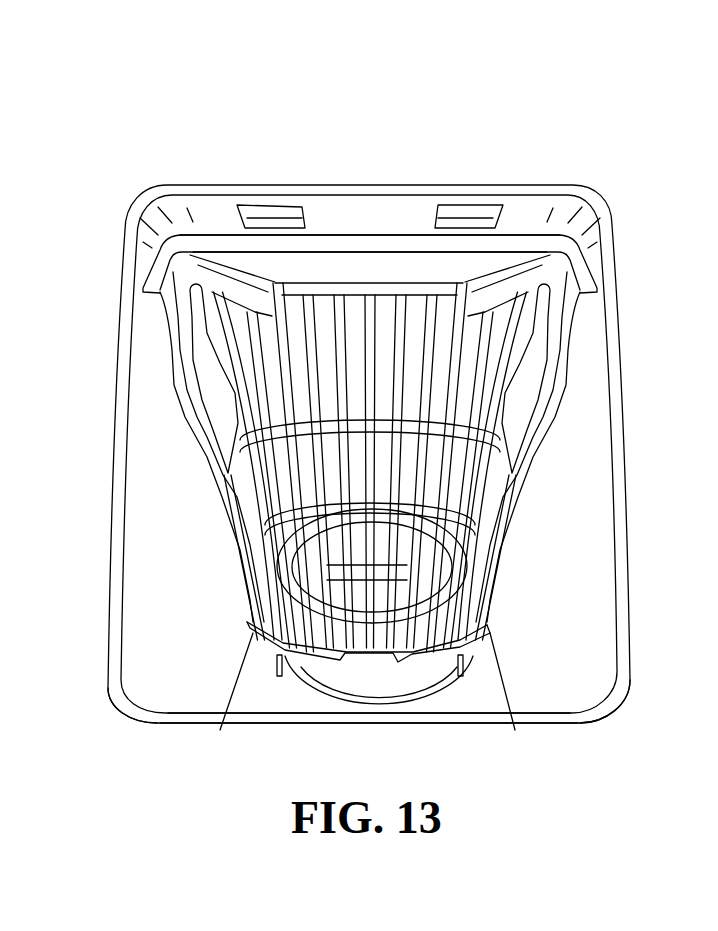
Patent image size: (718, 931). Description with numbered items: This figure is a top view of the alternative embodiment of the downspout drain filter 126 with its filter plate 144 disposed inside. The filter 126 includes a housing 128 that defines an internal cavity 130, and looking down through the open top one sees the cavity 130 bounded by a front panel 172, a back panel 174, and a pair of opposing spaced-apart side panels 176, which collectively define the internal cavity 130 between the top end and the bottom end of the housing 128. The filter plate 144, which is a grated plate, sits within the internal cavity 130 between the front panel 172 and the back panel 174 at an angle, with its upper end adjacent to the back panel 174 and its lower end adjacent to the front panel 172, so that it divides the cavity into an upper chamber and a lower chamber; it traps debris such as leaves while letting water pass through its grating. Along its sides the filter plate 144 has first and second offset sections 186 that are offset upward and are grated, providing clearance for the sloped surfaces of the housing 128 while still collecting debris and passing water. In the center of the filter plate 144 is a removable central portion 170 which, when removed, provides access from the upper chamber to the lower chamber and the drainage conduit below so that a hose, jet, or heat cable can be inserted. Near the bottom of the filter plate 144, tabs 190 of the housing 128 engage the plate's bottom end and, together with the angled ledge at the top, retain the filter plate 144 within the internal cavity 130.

The filter 126 is at (138, 110).
The housing 128 is at (145, 573).
The internal cavity 130 is at (186, 537).
The filter plate 144 is at (205, 458).
The removable central portion 170 is at (388, 596).
The front panel 172 is at (478, 717).
The back panel 174 is at (528, 188).
The side panels 176 is at (110, 643).
The offset sections 186 is at (173, 370).
The tabs 190 is at (276, 660).